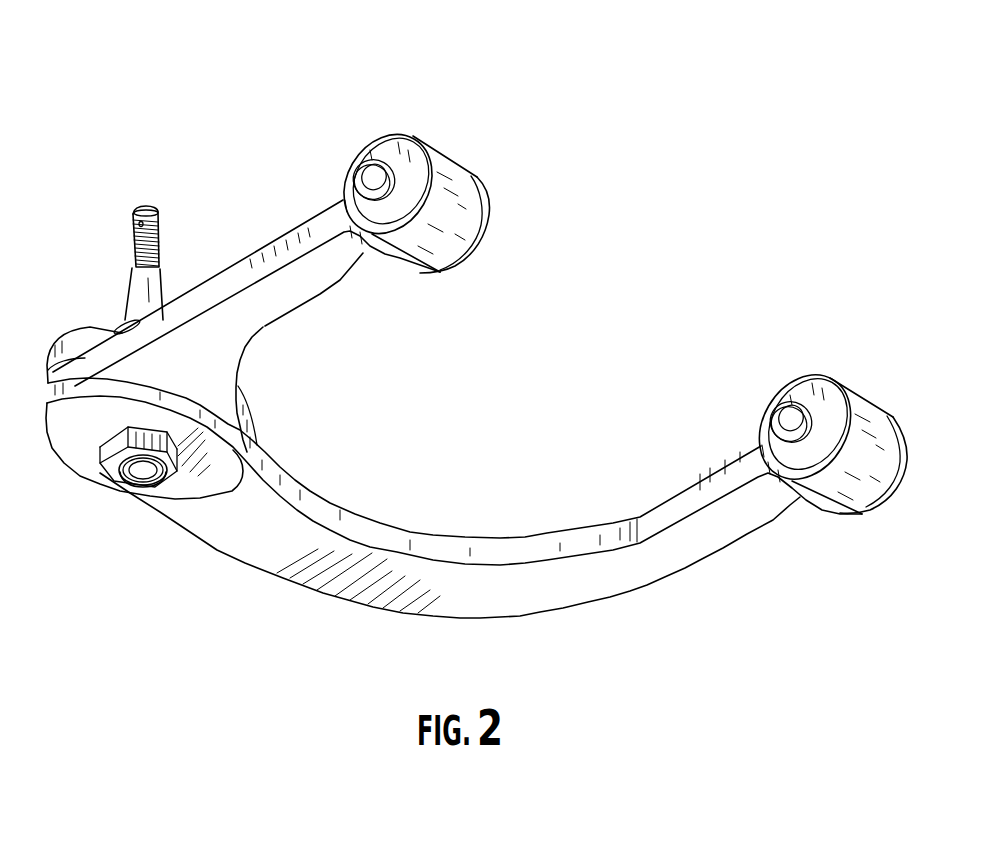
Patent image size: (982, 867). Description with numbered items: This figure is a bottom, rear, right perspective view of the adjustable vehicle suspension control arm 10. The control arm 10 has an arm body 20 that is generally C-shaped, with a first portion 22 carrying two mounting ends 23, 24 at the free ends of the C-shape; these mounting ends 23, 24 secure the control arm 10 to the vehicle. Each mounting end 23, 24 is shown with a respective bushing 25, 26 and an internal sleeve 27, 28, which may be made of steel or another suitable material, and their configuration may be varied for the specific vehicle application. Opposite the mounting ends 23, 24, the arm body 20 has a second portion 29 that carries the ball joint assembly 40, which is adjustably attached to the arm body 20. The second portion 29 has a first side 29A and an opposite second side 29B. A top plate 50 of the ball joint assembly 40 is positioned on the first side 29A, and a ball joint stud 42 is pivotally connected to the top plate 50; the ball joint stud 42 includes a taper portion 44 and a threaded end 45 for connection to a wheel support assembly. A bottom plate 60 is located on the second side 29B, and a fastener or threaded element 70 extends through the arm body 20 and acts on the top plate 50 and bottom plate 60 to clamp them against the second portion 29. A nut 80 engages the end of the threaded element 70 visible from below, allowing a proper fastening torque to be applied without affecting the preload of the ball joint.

The adjustable vehicle suspension control arm 10 is at (633, 220).
The arm body 20 is at (428, 528).
The first portion 22 is at (405, 130).
The mounting end 23 is at (870, 400).
The mounting end 24 is at (450, 162).
The bushing 25 is at (783, 388).
The bushing 26 is at (487, 220).
The internal sleeve 27 is at (780, 422).
The internal sleeve 28 is at (366, 177).
The second portion 29 is at (210, 550).
The first side 29A is at (312, 490).
The second side 29B is at (258, 556).
The ball joint assembly 40 is at (119, 323).
The ball joint stud 42 is at (160, 263).
The taper portion 44 is at (163, 286).
The threaded end 45 is at (133, 236).
The top plate 50 is at (47, 360).
The bottom plate 60 is at (73, 430).
The threaded element 70 is at (140, 478).
The nut 80 is at (113, 463).